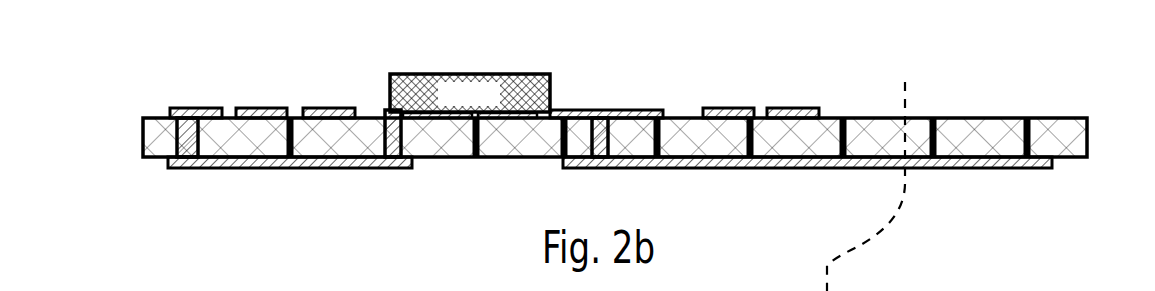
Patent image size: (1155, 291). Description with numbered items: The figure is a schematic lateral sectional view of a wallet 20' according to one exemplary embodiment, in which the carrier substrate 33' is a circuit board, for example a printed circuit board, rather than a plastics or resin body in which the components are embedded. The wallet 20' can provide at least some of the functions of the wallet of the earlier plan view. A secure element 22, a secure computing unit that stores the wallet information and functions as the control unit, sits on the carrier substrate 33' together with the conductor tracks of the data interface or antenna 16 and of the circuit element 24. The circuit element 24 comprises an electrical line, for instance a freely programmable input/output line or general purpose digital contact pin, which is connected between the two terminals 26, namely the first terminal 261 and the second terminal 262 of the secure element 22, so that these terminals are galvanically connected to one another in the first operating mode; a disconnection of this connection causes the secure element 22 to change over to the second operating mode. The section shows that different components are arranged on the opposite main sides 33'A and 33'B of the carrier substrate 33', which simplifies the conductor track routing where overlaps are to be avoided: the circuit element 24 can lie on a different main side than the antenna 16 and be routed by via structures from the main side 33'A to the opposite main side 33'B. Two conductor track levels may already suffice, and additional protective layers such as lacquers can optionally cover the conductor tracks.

The wallet 20' is at (572, 91).
The data interface 16 is at (263, 96).
The secure element 22 is at (471, 69).
The terminals 26 is at (606, 82).
The first terminal 261 is at (579, 114).
The second terminal 262 is at (634, 114).
The circuit element 24 is at (989, 172).
The carrier substrate 33' is at (1088, 138).
The first main side 33'A is at (940, 95).
The second main side 33'B is at (1041, 202).